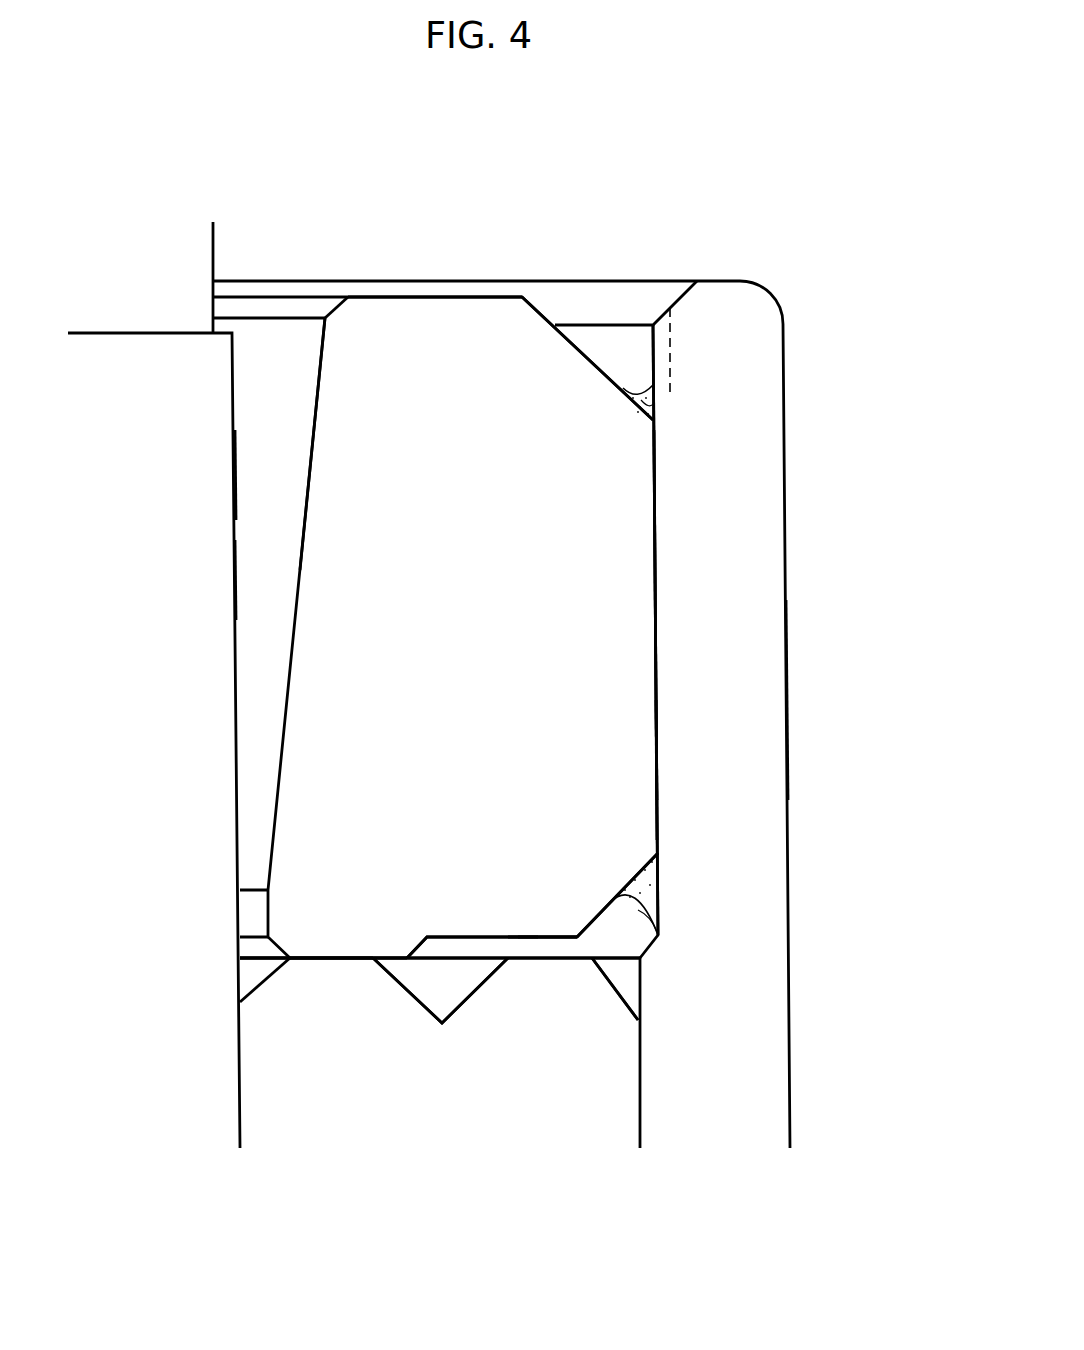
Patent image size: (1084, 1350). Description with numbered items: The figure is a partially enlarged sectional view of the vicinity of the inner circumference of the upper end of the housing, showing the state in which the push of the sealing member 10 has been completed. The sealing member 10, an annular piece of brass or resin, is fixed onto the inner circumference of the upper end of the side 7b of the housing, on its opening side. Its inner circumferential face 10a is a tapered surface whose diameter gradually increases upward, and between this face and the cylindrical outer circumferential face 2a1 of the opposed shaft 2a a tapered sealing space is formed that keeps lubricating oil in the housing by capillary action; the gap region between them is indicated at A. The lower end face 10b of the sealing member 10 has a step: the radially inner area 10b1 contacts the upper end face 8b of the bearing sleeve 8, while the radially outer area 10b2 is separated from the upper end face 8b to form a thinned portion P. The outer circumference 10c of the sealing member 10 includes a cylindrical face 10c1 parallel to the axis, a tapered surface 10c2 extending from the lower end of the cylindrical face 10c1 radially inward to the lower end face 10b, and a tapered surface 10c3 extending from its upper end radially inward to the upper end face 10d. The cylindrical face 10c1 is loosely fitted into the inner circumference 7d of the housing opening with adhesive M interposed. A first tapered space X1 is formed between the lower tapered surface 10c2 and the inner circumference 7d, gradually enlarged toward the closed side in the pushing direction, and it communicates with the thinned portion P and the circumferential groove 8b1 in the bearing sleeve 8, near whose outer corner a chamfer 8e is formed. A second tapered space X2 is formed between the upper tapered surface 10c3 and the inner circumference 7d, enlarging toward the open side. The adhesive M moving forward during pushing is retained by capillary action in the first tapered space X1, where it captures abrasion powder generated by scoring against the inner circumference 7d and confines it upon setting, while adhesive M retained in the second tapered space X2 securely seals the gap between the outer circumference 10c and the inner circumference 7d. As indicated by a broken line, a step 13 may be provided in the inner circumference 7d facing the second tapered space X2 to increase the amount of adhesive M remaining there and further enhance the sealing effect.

The shaft 2a is at (154, 241).
The outer circumferential face of the shaft 2a1 is at (235, 554).
The gap A is at (263, 470).
The sealing member 10 is at (461, 332).
The inner circumferential face of the sealing member 10a is at (315, 392).
The upper end face of the sealing member 10d is at (382, 297).
The tapered surface 10c3 is at (582, 347).
The second tapered space X2 is at (633, 353).
The step 13 is at (667, 393).
The adhesive M is at (650, 408).
The outer circumference of the sealing member 10c is at (676, 530).
The cylindrical face 10c1 is at (657, 593).
The side of the housing 7b is at (752, 705).
The inner circumference of the opening of the housing 7d is at (663, 727).
The first tapered space X1 is at (660, 932).
The tapered surface 10c2 is at (647, 952).
The chamfer 8e is at (627, 998).
The radially outer area of the step 10b2 is at (558, 940).
The thinned portion P is at (528, 950).
The upper end face of the bearing sleeve 8b is at (330, 958).
The radially inner area of the step 10b1 is at (307, 962).
The circumferential groove 8b1 is at (418, 1010).
The lower end face of the sealing member 10b is at (356, 991).
The bearing sleeve 8 is at (545, 1122).